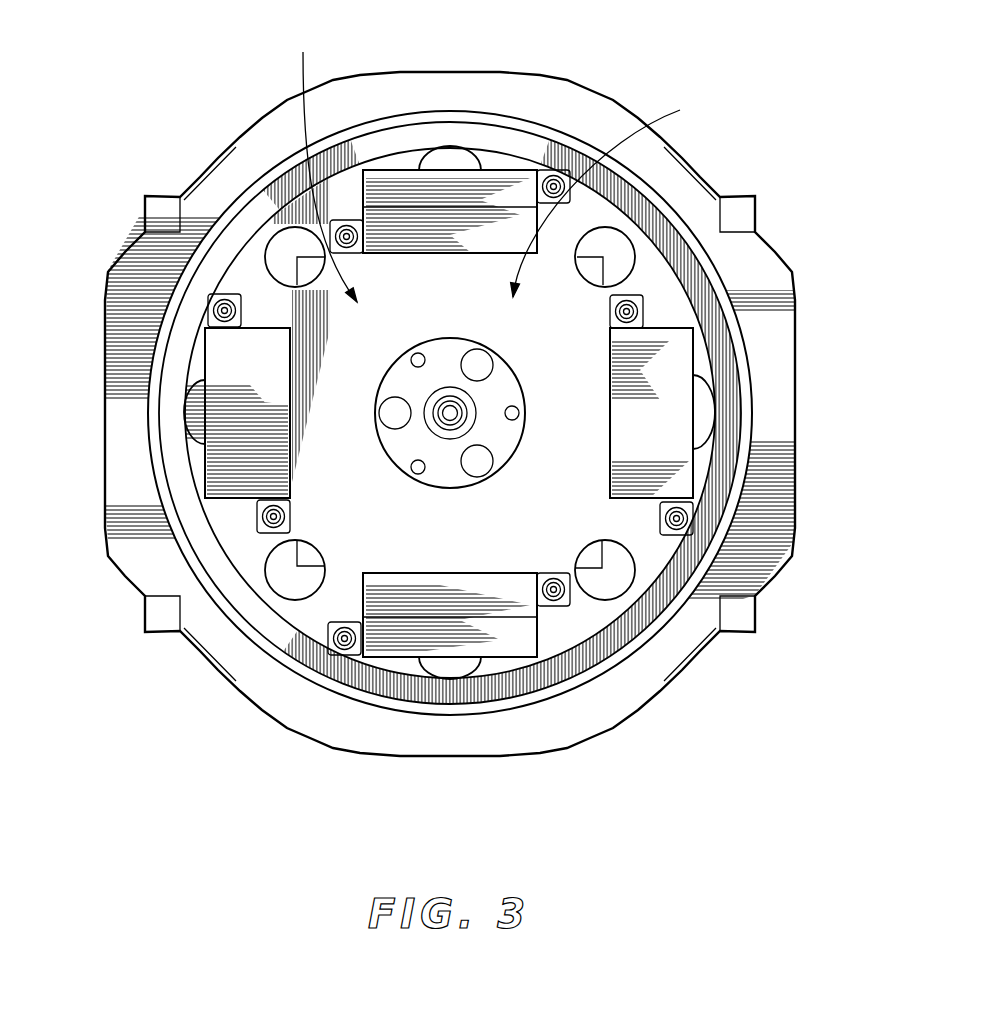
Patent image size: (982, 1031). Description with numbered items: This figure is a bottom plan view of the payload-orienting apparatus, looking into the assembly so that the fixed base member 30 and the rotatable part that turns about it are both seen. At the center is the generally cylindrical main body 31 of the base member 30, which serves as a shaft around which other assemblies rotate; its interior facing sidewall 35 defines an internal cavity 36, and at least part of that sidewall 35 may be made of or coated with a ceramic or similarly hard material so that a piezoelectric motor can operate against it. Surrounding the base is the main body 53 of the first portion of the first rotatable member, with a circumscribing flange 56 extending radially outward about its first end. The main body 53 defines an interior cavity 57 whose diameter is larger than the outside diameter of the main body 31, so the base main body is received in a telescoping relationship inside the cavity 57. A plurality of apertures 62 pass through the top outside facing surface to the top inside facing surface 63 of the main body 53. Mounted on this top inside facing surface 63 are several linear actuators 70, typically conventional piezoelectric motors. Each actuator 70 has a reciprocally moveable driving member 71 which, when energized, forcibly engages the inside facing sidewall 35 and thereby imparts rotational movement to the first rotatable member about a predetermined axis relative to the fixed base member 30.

The base member 30 is at (725, 363).
The main body 31 is at (648, 610).
The interior facing sidewall 35 is at (640, 472).
The internal cavity 36 is at (614, 190).
The main body 53 is at (310, 707).
The circumscribing flange 56 is at (147, 285).
The interior cavity 57 is at (323, 163).
The apertures 62 is at (282, 247).
The top inside facing surface 63 is at (468, 283).
The linear actuators 70 is at (243, 478).
The reciprocally moveable driving member 71 is at (456, 158).